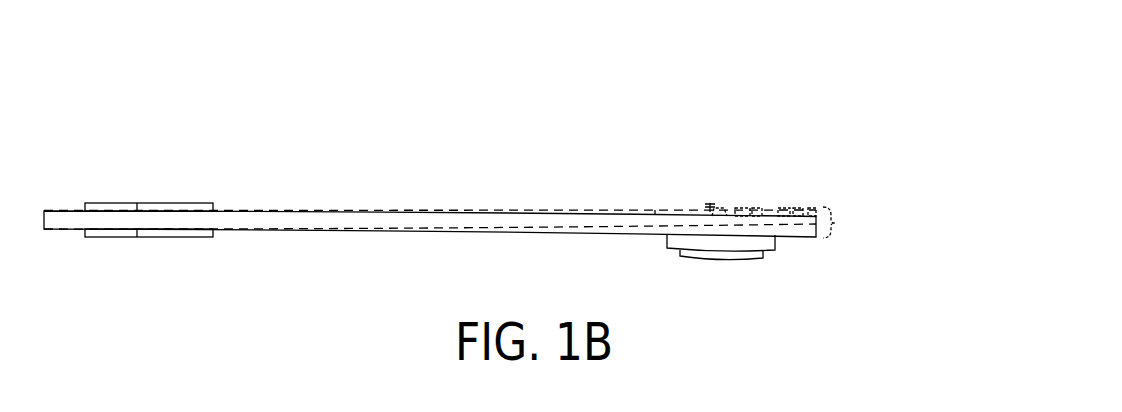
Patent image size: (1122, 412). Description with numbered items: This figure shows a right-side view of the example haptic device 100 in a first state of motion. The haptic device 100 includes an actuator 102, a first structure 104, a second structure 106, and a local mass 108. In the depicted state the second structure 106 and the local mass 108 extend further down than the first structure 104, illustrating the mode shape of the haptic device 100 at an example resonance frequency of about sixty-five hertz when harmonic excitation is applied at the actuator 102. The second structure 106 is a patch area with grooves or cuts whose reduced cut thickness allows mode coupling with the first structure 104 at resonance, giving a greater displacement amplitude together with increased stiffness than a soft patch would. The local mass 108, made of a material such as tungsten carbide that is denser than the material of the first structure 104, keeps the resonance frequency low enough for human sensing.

The haptic device 100 is at (718, 113).
The actuator 102 is at (113, 203).
The first structure 104 is at (487, 230).
The second structure 106 is at (672, 248).
The local mass 108 is at (725, 265).